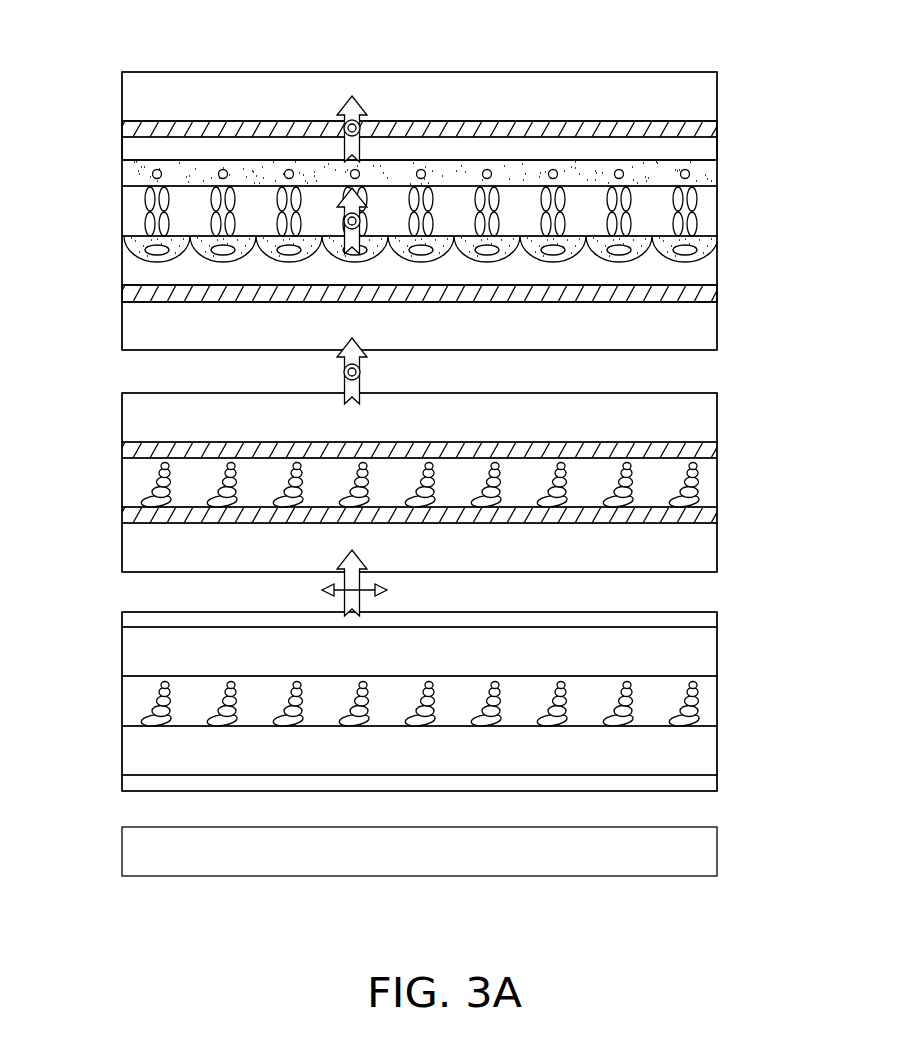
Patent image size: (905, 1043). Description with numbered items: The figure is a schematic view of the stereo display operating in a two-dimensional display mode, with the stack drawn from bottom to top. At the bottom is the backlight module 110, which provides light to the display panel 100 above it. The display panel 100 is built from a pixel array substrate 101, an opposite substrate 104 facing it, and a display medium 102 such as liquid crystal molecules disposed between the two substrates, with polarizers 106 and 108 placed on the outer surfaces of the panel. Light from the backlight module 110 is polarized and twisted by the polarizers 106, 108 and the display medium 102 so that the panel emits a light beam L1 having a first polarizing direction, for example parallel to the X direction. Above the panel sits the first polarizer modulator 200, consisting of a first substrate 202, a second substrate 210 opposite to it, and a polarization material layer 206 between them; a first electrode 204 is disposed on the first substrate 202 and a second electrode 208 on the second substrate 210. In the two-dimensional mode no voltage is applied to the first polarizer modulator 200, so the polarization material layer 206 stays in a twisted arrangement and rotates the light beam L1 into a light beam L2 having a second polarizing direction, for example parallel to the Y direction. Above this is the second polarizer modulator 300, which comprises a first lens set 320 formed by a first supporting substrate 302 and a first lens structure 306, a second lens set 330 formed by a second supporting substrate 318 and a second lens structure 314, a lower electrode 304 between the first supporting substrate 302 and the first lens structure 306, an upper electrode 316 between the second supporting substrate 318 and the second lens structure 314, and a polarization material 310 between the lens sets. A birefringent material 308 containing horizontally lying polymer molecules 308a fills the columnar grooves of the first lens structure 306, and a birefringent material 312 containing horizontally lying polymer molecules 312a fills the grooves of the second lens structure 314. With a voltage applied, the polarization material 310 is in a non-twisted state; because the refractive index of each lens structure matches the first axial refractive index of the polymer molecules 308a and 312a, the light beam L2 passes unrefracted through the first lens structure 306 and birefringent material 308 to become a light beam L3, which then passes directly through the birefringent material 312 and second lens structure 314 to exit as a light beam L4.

The display panel 100 is at (793, 612).
The pixel array substrate 101 is at (717, 750).
The display medium 102 is at (717, 702).
The opposite substrate 104 is at (717, 652).
The polarizer 106 is at (717, 784).
The polarizer 108 is at (717, 620).
The backlight module 110 is at (717, 855).
The first polarizer modulator 200 is at (793, 406).
The first substrate 202 is at (717, 546).
The first electrode 204 is at (717, 515).
The polarization material layer 206 is at (717, 483).
The second electrode 208 is at (717, 450).
The second substrate 210 is at (717, 420).
The second polarizer modulator 300 is at (793, 86).
The first supporting substrate 302 is at (717, 327).
The lower electrode 304 is at (717, 295).
The first lens structure 306 is at (717, 270).
The birefringent material 308 is at (717, 245).
The polymer molecules 308a is at (127, 247).
The polarization material 310 is at (717, 213).
The birefringent material 312 is at (717, 176).
The polymer molecules 312a is at (152, 174).
The second lens structure 314 is at (717, 150).
The upper electrode 316 is at (717, 128).
The second supporting substrate 318 is at (717, 92).
The first lens set 320 is at (127, 318).
The second lens set 330 is at (127, 150).
The light beam L1 is at (322, 590).
The light beam L2 is at (344, 372).
The light beam L3 is at (361, 213).
The light beam L4 is at (344, 128).